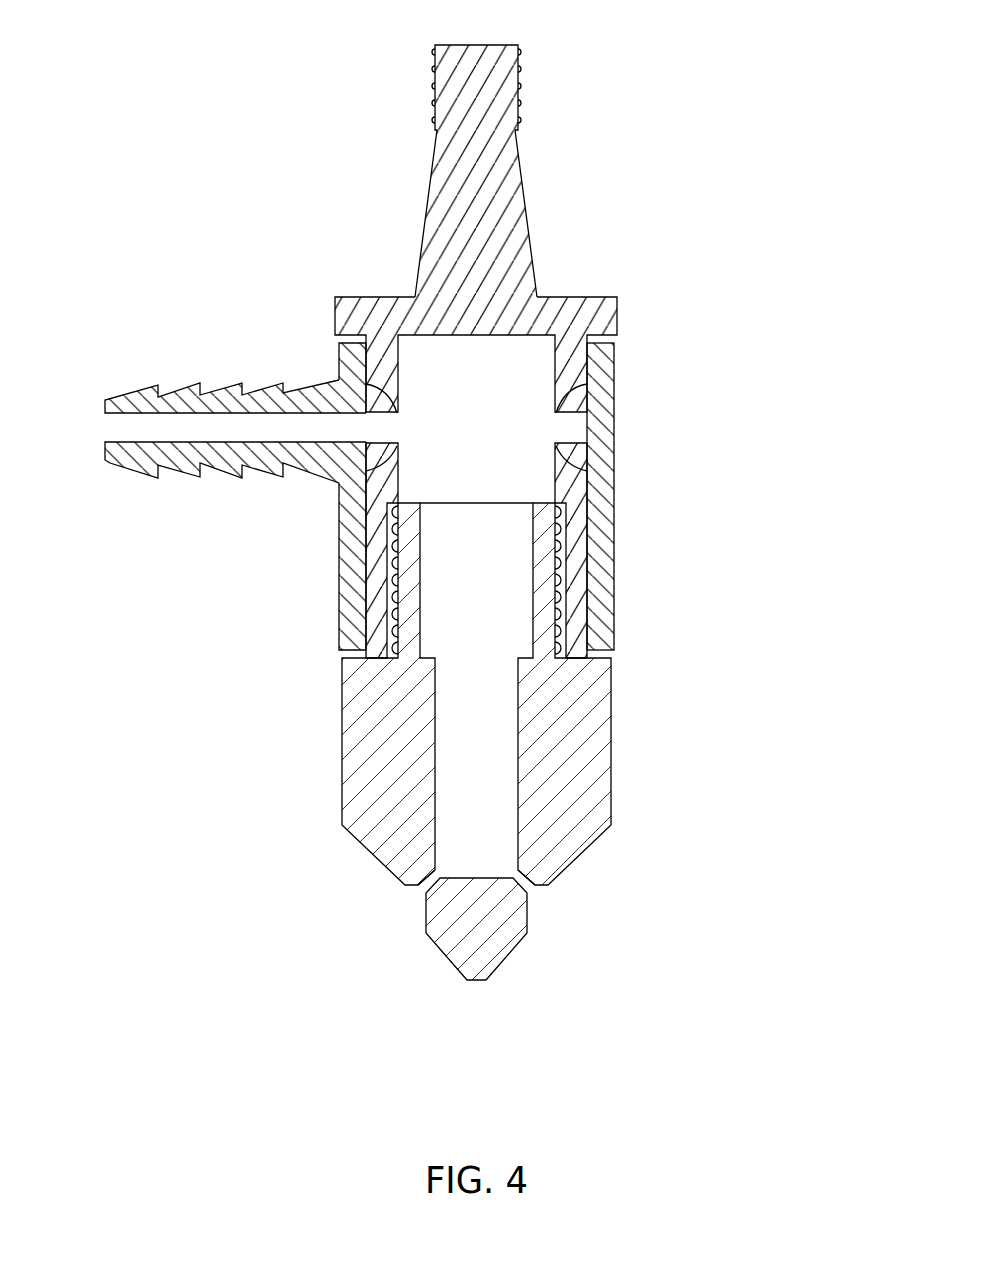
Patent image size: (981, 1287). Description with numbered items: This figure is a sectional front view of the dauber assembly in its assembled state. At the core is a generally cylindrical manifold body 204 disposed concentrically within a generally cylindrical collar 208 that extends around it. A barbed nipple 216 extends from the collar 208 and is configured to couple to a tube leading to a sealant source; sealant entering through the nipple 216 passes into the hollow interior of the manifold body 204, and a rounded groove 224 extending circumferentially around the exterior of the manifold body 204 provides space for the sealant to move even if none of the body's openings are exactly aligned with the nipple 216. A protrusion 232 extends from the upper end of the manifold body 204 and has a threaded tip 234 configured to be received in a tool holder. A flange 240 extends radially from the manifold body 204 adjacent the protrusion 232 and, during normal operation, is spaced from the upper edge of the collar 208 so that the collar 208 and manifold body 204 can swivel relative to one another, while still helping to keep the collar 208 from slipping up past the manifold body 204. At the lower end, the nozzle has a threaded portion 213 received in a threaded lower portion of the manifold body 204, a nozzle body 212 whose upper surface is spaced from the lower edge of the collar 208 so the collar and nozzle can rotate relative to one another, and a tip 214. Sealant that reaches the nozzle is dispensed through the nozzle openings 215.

The flange 240 is at (360, 310).
The protrusion 232 is at (520, 208).
The threaded tip 234 is at (517, 95).
The barbed nipple 216 is at (133, 400).
The rounded groove 224 is at (577, 448).
The collar 208 is at (352, 597).
The threaded portion 213 is at (562, 622).
The manifold body 204 is at (382, 523).
The nozzle body 212 is at (612, 767).
The nozzle openings 215 is at (425, 885).
The tip 214 is at (510, 943).